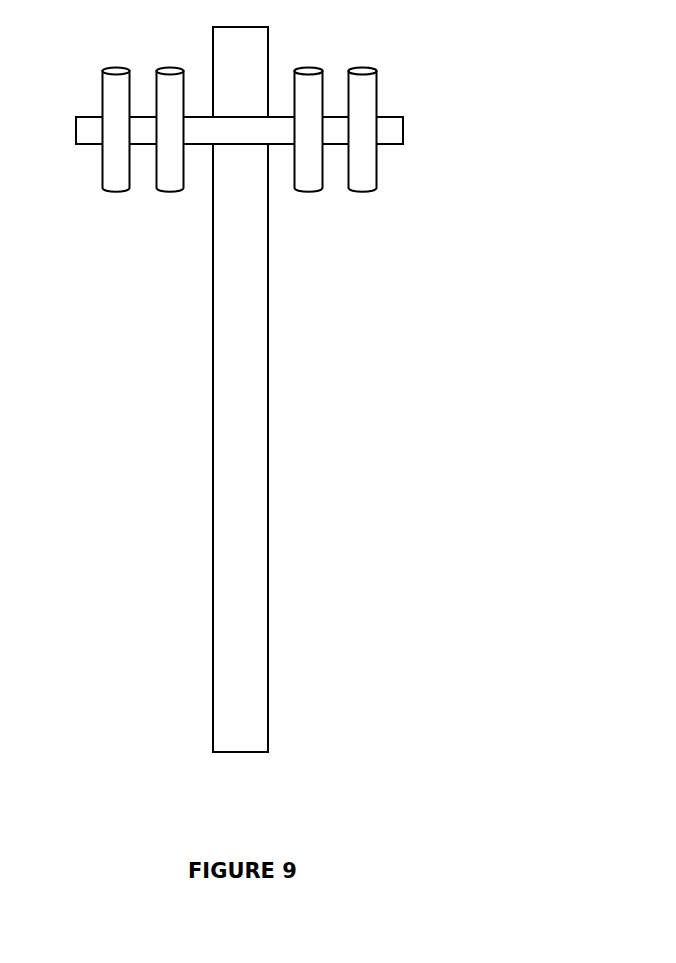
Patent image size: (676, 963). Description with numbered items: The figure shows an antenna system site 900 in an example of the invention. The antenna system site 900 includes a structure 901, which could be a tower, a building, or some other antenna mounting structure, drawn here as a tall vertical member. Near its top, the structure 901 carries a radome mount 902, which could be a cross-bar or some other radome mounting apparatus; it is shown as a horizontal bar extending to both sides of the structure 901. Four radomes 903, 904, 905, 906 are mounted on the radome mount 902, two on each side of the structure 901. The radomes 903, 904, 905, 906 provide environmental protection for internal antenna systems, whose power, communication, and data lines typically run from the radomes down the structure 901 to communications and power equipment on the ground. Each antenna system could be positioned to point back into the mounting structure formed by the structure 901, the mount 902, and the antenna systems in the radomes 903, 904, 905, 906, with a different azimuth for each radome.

The antenna system site 900 is at (560, 47).
The structure 901 is at (268, 343).
The radome mount 902 is at (403, 117).
The radome 903 is at (376, 70).
The radome 904 is at (306, 66).
The radome 905 is at (177, 66).
The radome 906 is at (110, 66).